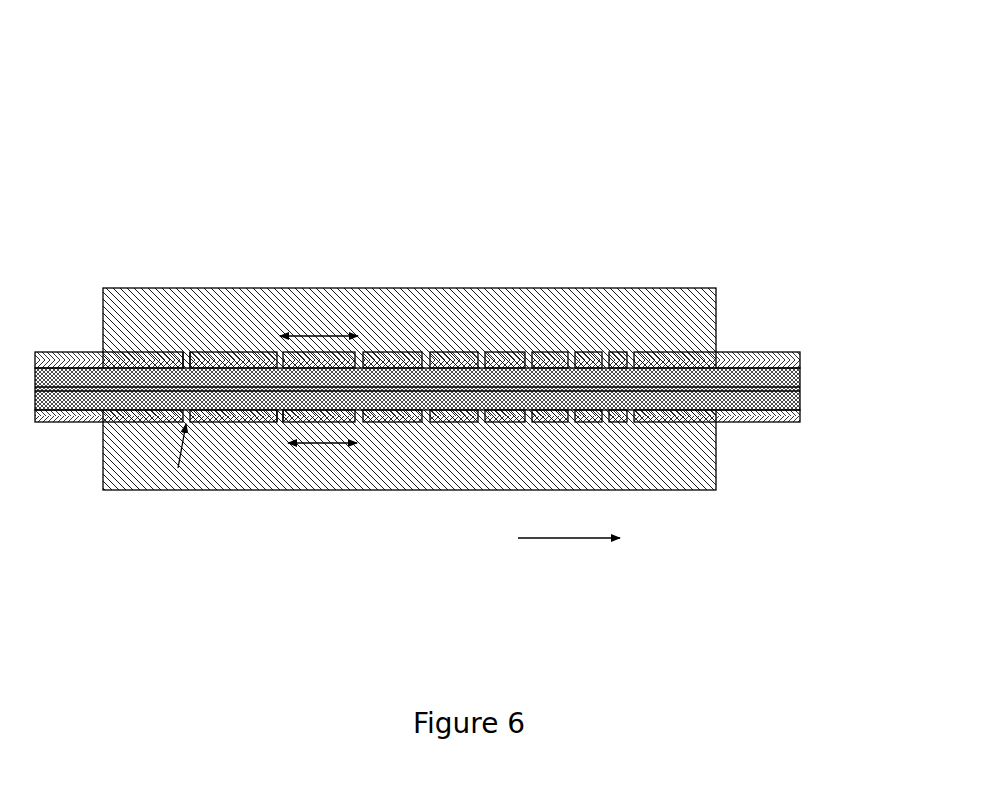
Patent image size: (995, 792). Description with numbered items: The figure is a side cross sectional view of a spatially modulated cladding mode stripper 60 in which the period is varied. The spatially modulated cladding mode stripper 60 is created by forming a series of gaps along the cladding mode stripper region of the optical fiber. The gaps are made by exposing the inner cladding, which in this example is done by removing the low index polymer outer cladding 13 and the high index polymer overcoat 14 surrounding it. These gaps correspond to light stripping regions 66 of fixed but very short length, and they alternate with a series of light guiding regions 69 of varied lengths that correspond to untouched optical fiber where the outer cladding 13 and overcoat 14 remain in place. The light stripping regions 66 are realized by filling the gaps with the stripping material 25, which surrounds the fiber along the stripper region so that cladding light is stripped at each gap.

The spatially modulated cladding mode stripper 60 is at (457, 304).
The stripping material 25 is at (512, 305).
The light guiding regions 69 is at (321, 290).
The high index polymer overcoat 14 is at (457, 393).
The low index polymer outer cladding 13 is at (800, 369).
The light stripping regions 66 is at (173, 495).